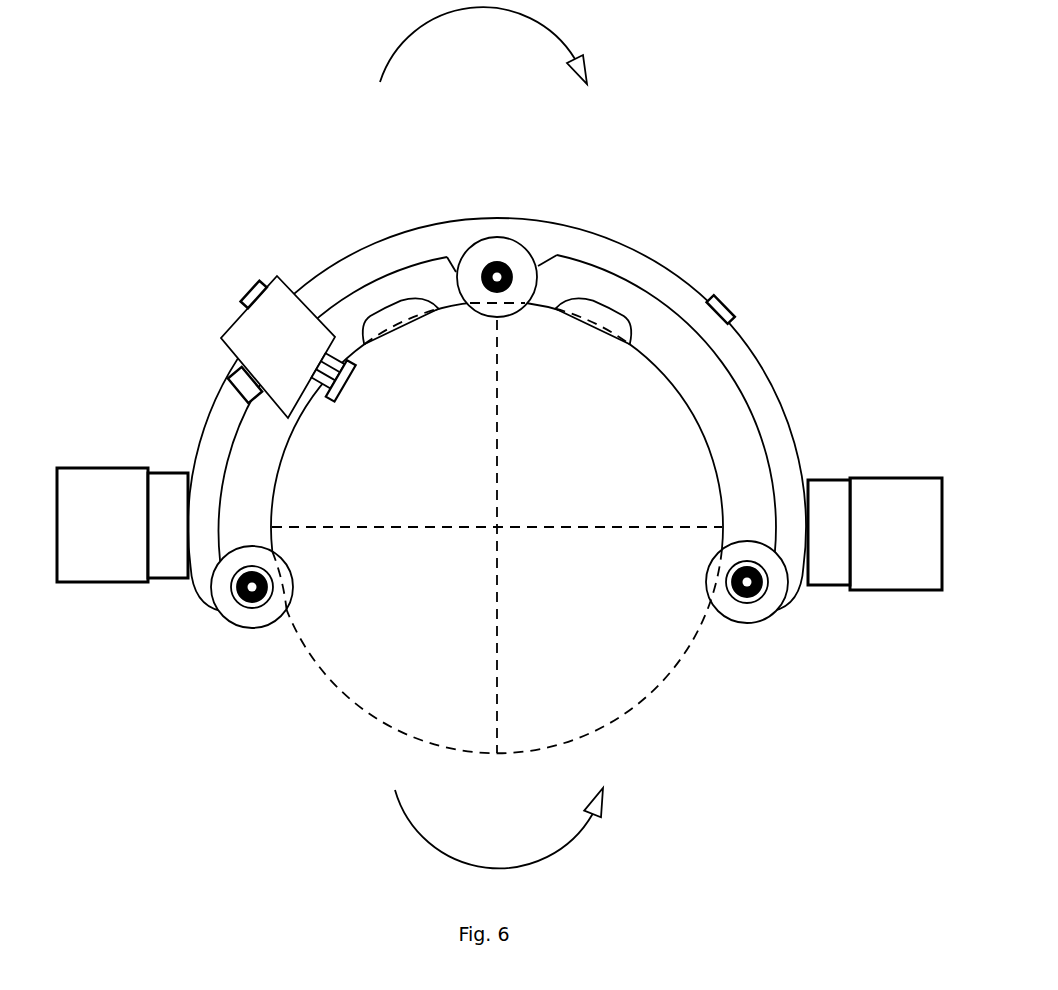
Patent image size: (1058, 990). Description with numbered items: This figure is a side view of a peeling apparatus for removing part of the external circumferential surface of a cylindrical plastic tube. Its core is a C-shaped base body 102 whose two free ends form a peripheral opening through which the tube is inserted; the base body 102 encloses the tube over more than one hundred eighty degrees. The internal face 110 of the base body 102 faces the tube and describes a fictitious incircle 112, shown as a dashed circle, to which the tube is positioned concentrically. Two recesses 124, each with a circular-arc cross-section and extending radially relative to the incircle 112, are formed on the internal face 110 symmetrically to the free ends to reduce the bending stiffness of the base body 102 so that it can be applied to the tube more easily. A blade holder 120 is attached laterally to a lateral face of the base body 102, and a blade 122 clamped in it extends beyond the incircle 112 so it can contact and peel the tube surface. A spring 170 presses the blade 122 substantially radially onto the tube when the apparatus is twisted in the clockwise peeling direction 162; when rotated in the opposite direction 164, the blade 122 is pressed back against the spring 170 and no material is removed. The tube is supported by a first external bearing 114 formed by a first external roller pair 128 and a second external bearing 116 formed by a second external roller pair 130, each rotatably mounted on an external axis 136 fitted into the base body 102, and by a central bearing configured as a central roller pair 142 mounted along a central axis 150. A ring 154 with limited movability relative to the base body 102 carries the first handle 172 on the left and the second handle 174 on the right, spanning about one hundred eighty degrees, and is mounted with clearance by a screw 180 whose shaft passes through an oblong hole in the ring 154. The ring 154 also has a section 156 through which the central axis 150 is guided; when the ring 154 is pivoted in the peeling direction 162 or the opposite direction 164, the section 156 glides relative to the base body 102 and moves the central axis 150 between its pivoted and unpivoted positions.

The base body 102 is at (497, 525).
The internal face 110 is at (715, 468).
The incircle 112 is at (565, 745).
The first external bearing 114 is at (205, 614).
The first external roller pair 128 is at (220, 606).
The second external bearing 116 is at (786, 621).
The second external roller pair 130 is at (770, 598).
The blade holder 120 is at (258, 337).
The blade 122 is at (363, 393).
The recess 124 is at (390, 334).
The external axis 136 is at (250, 606).
The central roller pair 142 is at (458, 275).
The central axis 150 is at (503, 268).
The ring 154 is at (650, 275).
The section 156 is at (550, 262).
The direction 162 is at (469, 18).
The opposite direction 164 is at (497, 862).
The spring 170 is at (242, 293).
The first handle 172 is at (125, 534).
The second handle 174 is at (833, 504).
The screw 180 is at (727, 305).